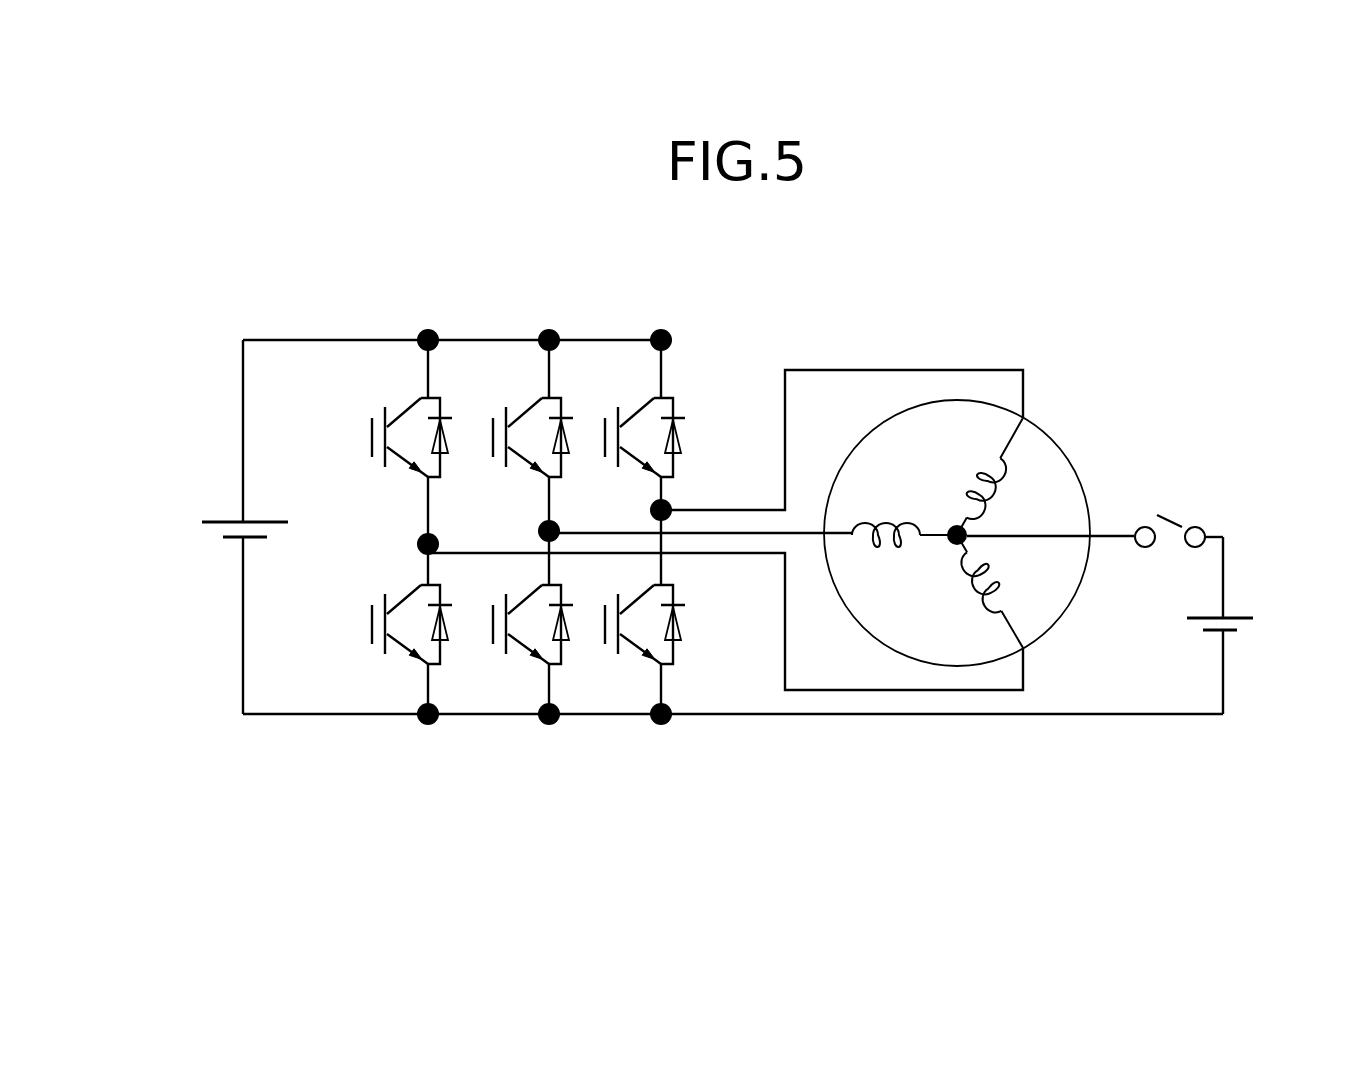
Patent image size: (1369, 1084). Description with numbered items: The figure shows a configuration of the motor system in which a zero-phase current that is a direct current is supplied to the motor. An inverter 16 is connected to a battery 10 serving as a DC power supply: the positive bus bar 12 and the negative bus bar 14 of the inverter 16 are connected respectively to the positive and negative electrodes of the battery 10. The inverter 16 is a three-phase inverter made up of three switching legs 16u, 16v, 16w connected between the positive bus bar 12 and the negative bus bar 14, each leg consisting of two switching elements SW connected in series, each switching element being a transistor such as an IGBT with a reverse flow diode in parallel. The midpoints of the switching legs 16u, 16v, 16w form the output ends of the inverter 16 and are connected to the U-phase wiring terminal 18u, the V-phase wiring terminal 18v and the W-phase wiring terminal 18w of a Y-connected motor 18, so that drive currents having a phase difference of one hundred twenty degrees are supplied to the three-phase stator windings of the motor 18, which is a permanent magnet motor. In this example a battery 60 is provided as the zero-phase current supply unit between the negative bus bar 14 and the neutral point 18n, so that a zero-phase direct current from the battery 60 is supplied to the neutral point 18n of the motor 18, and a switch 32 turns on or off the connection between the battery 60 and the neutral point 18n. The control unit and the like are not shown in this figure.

The battery 10 is at (195, 525).
The positive bus bar 12 is at (302, 340).
The negative bus bar 14 is at (323, 717).
The inverter 16 is at (557, 564).
The switching leg 16u is at (448, 372).
The switching leg 16v is at (577, 372).
The switching leg 16w is at (698, 372).
The motor 18 is at (992, 508).
The U-phase wiring terminal 18u is at (1007, 690).
The V-phase wiring terminal 18v is at (803, 537).
The W-phase wiring terminal 18w is at (998, 370).
The neutral point 18n is at (985, 545).
The switch 32 is at (1167, 505).
The battery 60 is at (1245, 628).